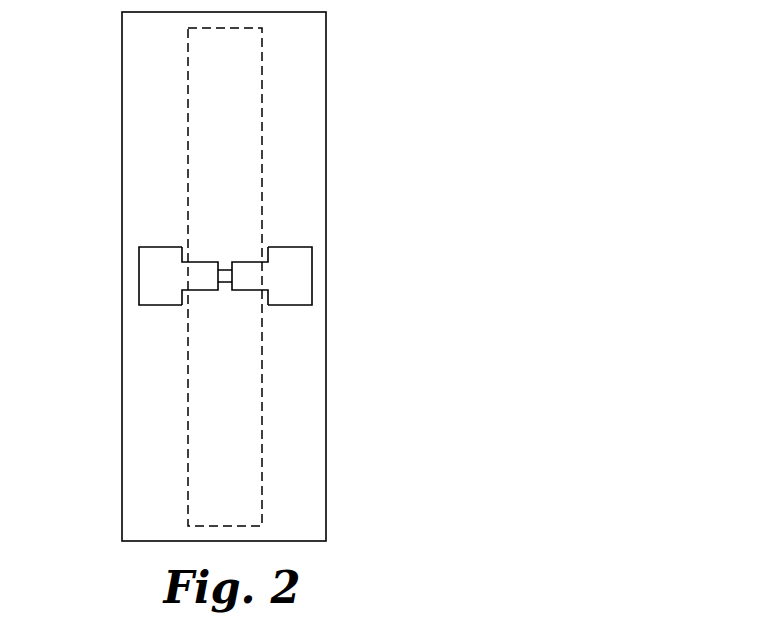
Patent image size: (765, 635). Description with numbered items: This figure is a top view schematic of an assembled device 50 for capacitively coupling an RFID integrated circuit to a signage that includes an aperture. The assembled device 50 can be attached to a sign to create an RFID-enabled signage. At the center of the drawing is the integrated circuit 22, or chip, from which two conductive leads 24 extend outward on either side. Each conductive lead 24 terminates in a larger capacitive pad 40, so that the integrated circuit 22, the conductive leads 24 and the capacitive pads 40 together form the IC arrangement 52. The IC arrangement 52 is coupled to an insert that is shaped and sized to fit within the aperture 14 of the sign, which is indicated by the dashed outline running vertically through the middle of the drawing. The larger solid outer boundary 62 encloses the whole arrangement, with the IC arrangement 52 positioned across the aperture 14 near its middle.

The assembled device 50 is at (362, 46).
The housing / substrate 62 is at (138, 95).
The aperture 14 is at (188, 398).
The capacitive pads 40 is at (145, 272).
The IC arrangement 52 is at (312, 249).
The conductive leads 24 is at (205, 270).
The integrated circuit 22 is at (223, 282).